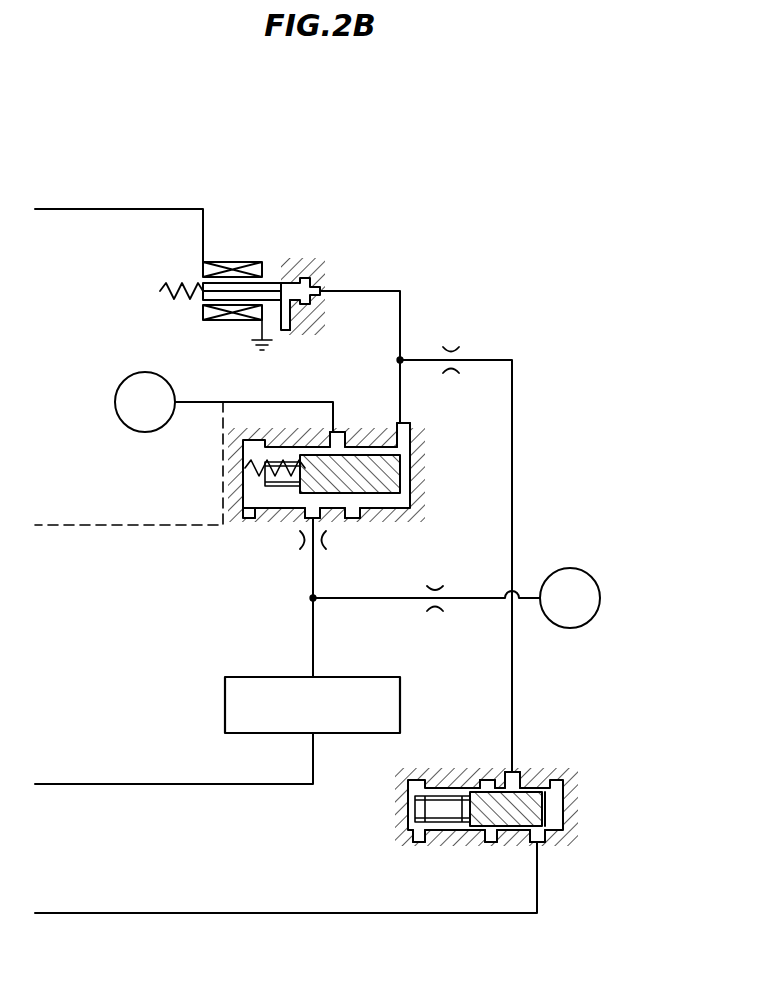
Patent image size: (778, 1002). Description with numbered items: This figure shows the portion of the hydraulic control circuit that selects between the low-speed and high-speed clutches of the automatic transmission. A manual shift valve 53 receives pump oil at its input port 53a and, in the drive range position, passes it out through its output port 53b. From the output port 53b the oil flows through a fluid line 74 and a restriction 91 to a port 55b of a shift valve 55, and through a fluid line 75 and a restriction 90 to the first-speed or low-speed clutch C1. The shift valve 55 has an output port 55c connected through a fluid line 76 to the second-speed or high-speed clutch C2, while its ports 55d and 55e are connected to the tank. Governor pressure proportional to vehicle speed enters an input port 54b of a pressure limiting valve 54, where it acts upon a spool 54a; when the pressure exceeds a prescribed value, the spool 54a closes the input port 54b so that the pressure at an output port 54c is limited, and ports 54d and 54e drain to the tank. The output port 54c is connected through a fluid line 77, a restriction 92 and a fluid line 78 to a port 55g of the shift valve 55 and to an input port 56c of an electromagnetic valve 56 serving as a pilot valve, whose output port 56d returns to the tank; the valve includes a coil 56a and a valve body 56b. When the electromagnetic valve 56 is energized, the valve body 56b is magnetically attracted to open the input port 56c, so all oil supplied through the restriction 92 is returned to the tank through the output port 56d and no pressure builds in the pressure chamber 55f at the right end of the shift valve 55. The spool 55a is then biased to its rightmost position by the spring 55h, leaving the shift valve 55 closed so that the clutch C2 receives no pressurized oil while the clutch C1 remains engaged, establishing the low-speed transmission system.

The manual shift valve 53 is at (290, 702).
The input port of manual shift valve 53a is at (311, 735).
The output port of manual shift valve 53b is at (310, 676).
The pressure limiting valve 54 is at (498, 816).
The spool 54a is at (480, 784).
The input port of pressure limiting valve 54b is at (540, 842).
The output port of pressure limiting valve 54c is at (516, 779).
The port of pressure limiting valve 54d is at (490, 842).
The port of pressure limiting valve 54e is at (420, 842).
The shift valve 55 is at (309, 463).
The spool 55a is at (412, 466).
The port of shift valve 55b is at (306, 510).
The output port of shift valve 55c is at (340, 430).
The port of shift valve 55d is at (355, 510).
The port of shift valve 55e is at (248, 508).
The pressure chamber 55f is at (412, 442).
The port of shift valve 55g is at (412, 425).
The spring 55h is at (258, 470).
The electromagnetic valve 56 is at (260, 305).
The solenoid coil 56a is at (238, 262).
The valve body 56b is at (203, 296).
The input port of electromagnetic valve 56c is at (318, 290).
The output port of electromagnetic valve 56d is at (293, 332).
The fluid line 74 is at (315, 647).
The fluid line 75 is at (398, 601).
The fluid line 76 is at (262, 400).
The fluid line 77 is at (514, 452).
The fluid line 78 is at (402, 300).
The restriction 90 is at (438, 613).
The restriction 91 is at (325, 542).
The restriction 92 is at (452, 345).
The first-speed clutch C1 is at (588, 568).
The second-speed clutch C2 is at (117, 396).